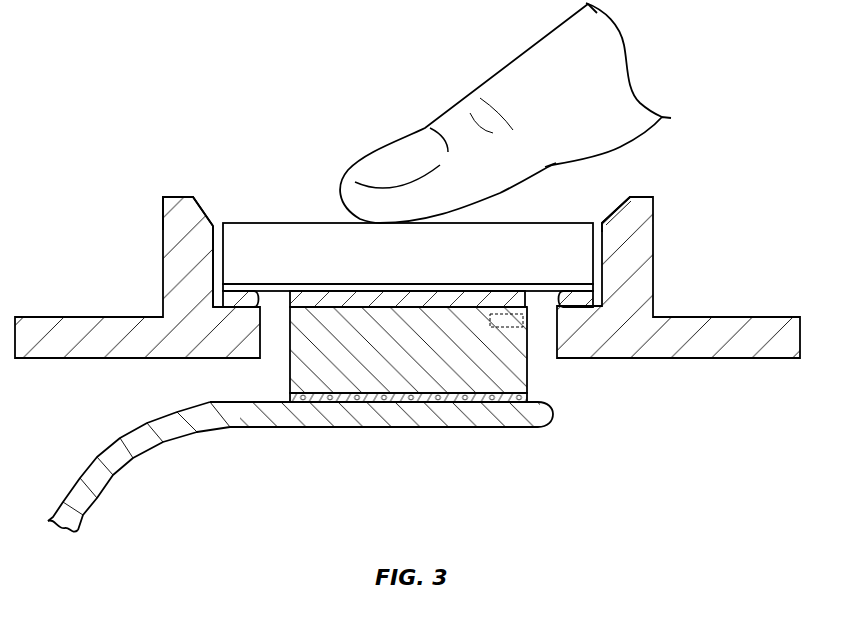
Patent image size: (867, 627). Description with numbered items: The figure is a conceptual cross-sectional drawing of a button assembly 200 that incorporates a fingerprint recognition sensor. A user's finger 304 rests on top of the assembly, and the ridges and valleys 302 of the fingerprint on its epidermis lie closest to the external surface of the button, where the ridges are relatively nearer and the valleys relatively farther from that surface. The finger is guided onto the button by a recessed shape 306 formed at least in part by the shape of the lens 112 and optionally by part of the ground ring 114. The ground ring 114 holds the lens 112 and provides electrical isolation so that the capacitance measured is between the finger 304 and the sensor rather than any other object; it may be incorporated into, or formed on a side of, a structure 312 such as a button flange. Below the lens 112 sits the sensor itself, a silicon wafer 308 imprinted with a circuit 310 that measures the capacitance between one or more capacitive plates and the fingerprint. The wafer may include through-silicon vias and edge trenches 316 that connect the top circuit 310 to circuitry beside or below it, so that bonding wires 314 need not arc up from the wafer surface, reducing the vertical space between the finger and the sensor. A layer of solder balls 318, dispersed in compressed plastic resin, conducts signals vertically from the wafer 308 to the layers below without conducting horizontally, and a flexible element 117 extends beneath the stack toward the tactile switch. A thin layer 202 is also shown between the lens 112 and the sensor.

The button assembly 200 is at (90, 50).
The ground ring 114 is at (182, 132).
The structure for supporting or integrating the ground ring 312 is at (158, 193).
The recessed shape 306 is at (617, 194).
The lens 112 is at (225, 222).
The ridges and valleys 302 is at (487, 217).
The thin layer 202 is at (555, 282).
The bonding wires 314 is at (270, 297).
The silicon wafer 308 is at (529, 366).
The circuit 310 is at (353, 316).
The edge trenches 316 is at (508, 332).
The solder balls 318 is at (529, 400).
The flexible element 117 is at (158, 444).
The user's finger 304 is at (460, 100).